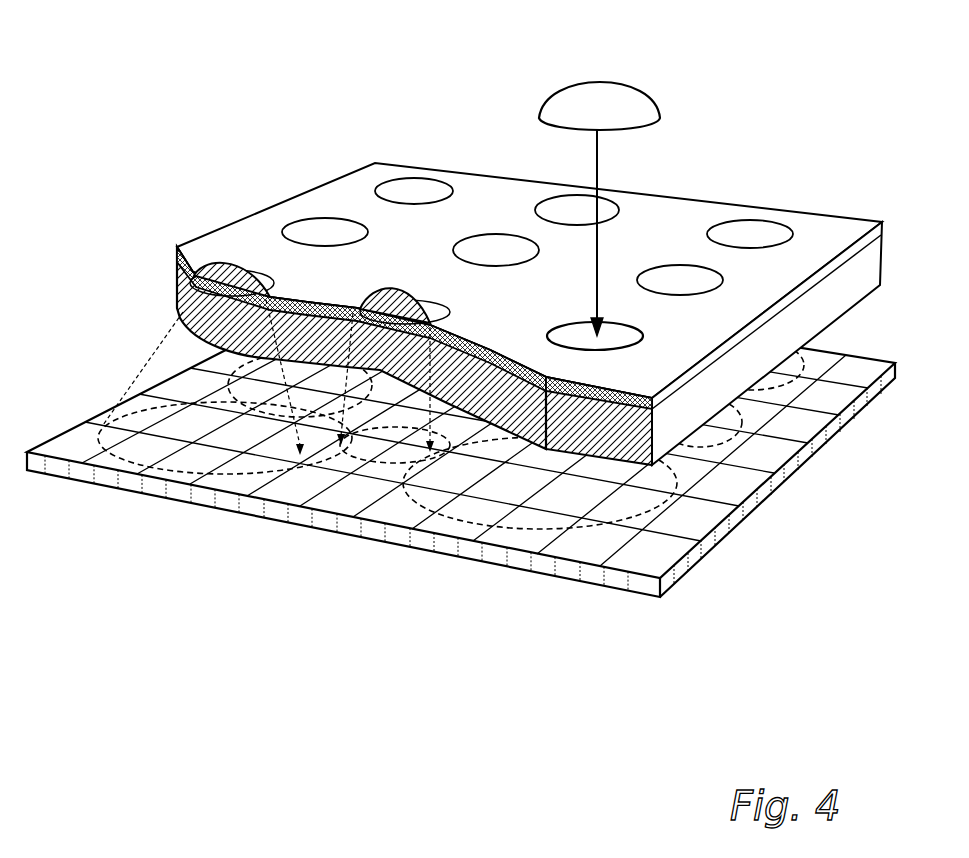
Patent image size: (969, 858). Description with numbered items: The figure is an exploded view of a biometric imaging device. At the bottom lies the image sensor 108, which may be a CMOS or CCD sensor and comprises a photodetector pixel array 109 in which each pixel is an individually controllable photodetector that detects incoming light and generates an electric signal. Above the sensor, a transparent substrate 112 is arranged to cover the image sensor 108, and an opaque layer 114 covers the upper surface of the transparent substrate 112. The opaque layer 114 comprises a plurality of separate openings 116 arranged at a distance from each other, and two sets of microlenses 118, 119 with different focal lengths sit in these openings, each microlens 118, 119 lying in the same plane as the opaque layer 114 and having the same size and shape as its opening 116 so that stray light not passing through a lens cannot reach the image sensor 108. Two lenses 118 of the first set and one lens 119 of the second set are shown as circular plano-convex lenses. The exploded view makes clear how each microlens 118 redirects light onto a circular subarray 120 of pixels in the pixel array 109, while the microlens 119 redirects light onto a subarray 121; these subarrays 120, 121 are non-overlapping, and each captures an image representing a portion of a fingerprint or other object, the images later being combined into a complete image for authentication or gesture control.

The image sensor 108 is at (132, 482).
The photodetector pixel array 109 is at (746, 474).
The transparent substrate 112 is at (178, 286).
The opaque layer 114 is at (190, 248).
The opening 116 is at (615, 342).
The microlens of the first set 118 is at (235, 270).
The microlens of the second set 119 is at (432, 308).
The subarray of pixels 120 is at (257, 473).
The subarray of pixels 121 is at (368, 466).